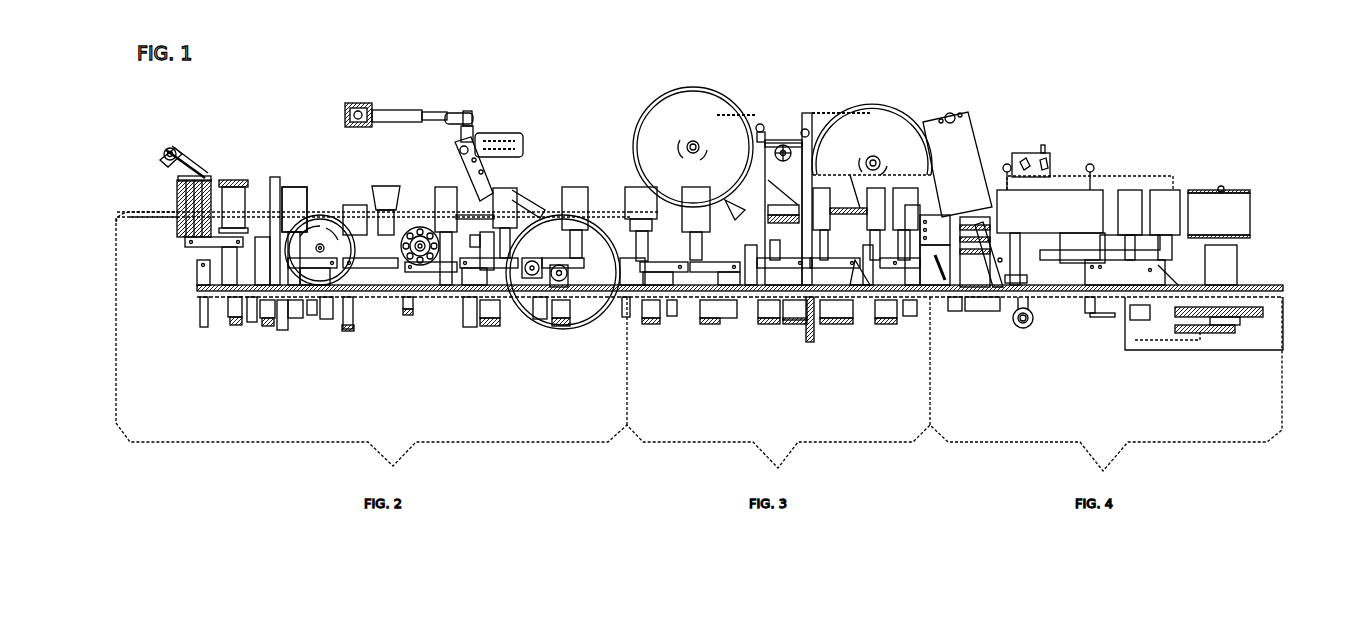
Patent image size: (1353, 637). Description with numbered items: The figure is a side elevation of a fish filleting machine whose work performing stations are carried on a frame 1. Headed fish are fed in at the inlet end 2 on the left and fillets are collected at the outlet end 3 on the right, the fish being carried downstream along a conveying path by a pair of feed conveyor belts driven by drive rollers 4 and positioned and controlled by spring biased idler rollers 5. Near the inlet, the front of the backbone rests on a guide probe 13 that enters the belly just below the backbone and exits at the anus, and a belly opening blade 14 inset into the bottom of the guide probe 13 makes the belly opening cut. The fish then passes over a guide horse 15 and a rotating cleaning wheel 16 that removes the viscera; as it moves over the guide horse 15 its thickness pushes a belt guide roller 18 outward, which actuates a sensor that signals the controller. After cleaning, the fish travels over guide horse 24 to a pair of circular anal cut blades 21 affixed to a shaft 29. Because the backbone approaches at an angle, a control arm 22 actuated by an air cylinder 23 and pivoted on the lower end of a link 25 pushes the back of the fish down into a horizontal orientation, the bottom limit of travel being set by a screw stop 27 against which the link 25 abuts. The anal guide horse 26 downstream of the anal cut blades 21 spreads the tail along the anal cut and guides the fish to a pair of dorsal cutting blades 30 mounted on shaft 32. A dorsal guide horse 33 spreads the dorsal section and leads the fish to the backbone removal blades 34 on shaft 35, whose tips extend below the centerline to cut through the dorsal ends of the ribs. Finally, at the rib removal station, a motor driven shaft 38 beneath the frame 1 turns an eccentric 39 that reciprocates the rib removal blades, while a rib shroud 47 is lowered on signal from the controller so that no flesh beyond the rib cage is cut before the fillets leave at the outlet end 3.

The frame 1 is at (390, 292).
The inlet end 2 is at (699, 341).
The outlet end 3 is at (1159, 247).
The drive rollers 4 is at (1236, 235).
The idler rollers 5 is at (293, 186).
The guide probe 13 is at (122, 214).
The belly opening blade 14 is at (320, 213).
The guide horse 15 is at (362, 212).
The cleaning wheel 16 is at (433, 282).
The roller 18 is at (392, 185).
The anal cut blades 21 is at (563, 313).
The control arm 22 is at (524, 195).
The air cylinder 23 is at (390, 118).
The guide horse 24 is at (488, 238).
The link 25 is at (469, 142).
The anal guide horse 26 is at (612, 208).
The screw stop 27 is at (487, 137).
The shaft 29 is at (560, 278).
The dorsal cutting blades 30 is at (726, 93).
The shaft 32 is at (695, 138).
The dorsal guide horse 33 is at (784, 148).
The backbone removal blades 34 is at (876, 102).
The shaft 35 is at (880, 158).
The shaft 38 is at (1006, 325).
The eccentric 39 is at (1046, 334).
The rib shroud 47 is at (975, 130).